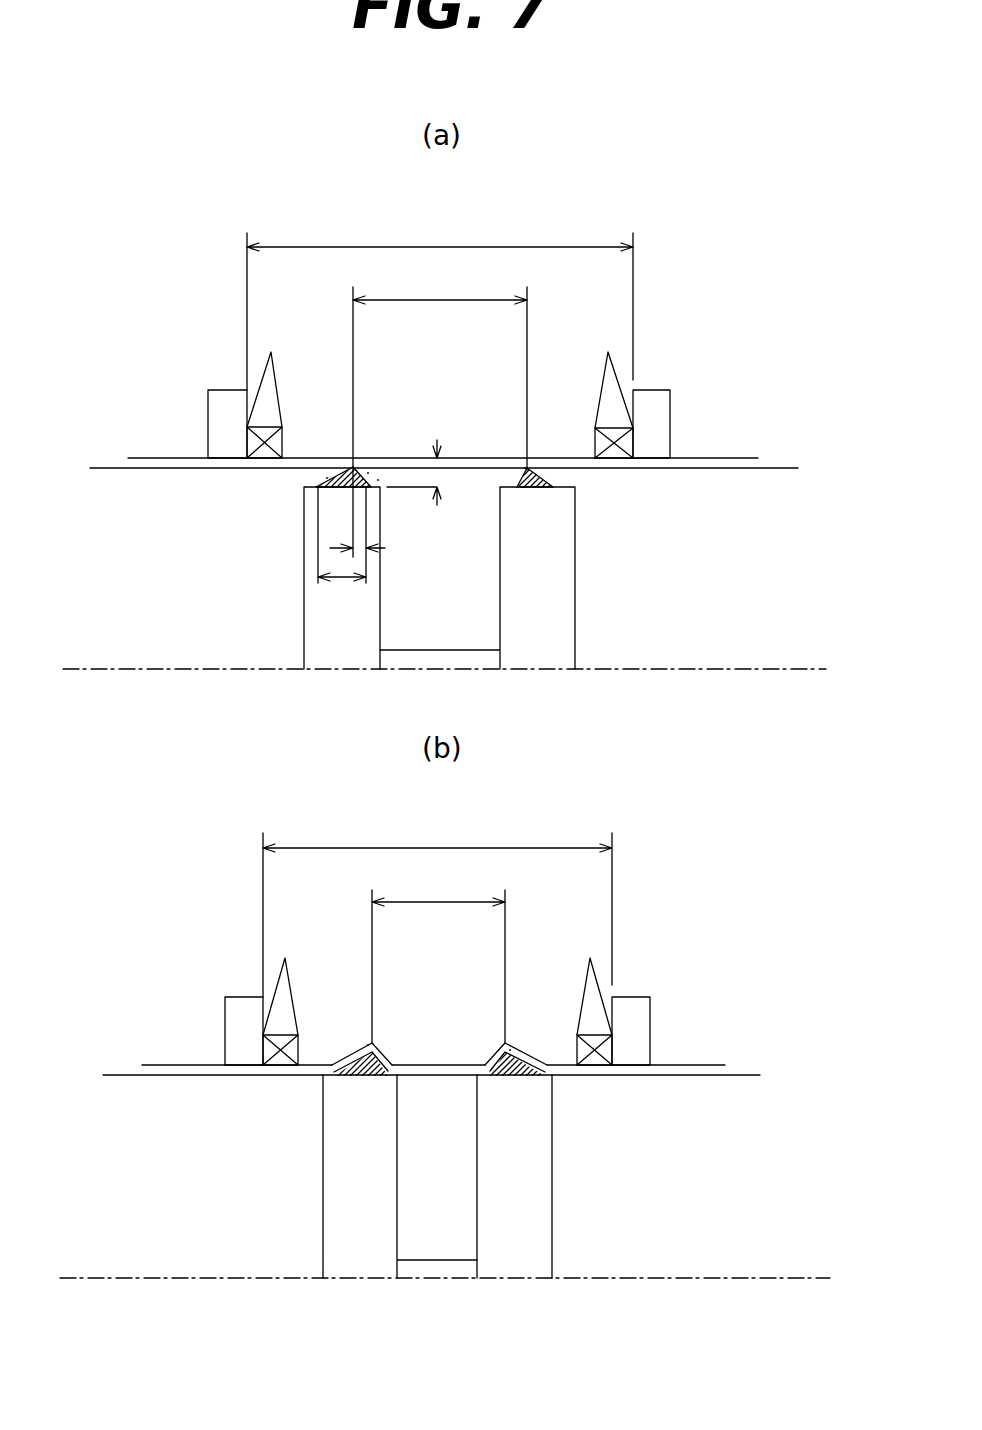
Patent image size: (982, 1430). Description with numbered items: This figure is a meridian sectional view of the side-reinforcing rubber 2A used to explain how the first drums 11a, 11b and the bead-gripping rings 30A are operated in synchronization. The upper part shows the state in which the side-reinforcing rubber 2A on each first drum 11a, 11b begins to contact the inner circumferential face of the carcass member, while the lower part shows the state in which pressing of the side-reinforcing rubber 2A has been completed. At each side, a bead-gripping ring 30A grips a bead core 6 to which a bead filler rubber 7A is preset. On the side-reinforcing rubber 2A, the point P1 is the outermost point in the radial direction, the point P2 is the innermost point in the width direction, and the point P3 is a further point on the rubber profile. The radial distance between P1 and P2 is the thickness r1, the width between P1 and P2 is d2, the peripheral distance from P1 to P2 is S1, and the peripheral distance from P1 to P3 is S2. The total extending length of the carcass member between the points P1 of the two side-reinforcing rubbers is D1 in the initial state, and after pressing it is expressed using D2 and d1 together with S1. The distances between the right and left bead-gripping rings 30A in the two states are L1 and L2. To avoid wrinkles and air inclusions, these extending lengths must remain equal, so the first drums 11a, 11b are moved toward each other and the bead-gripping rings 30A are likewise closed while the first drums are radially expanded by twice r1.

The side-reinforcing rubber 2A is at (540, 480).
The bead core 6 is at (593, 440).
The bead filler rubber 7A is at (605, 367).
The first drum 11a is at (538, 587).
The first drum 11b is at (317, 632).
The bead-gripping ring 30A is at (662, 400).
The point P1 is at (353, 467).
The point P2 is at (378, 480).
The point P3 is at (318, 487).
The peripheral distance s1 S1 is at (368, 473).
The peripheral distance s2 S2 is at (327, 478).
The distance L1 is at (440, 300).
The total extending length D1 is at (440, 410).
The thickness r1 is at (428, 476).
The distance d1 is at (366, 535).
The width d2 is at (342, 599).
The distance L2 is at (437, 904).
The distance D2 is at (438, 954).